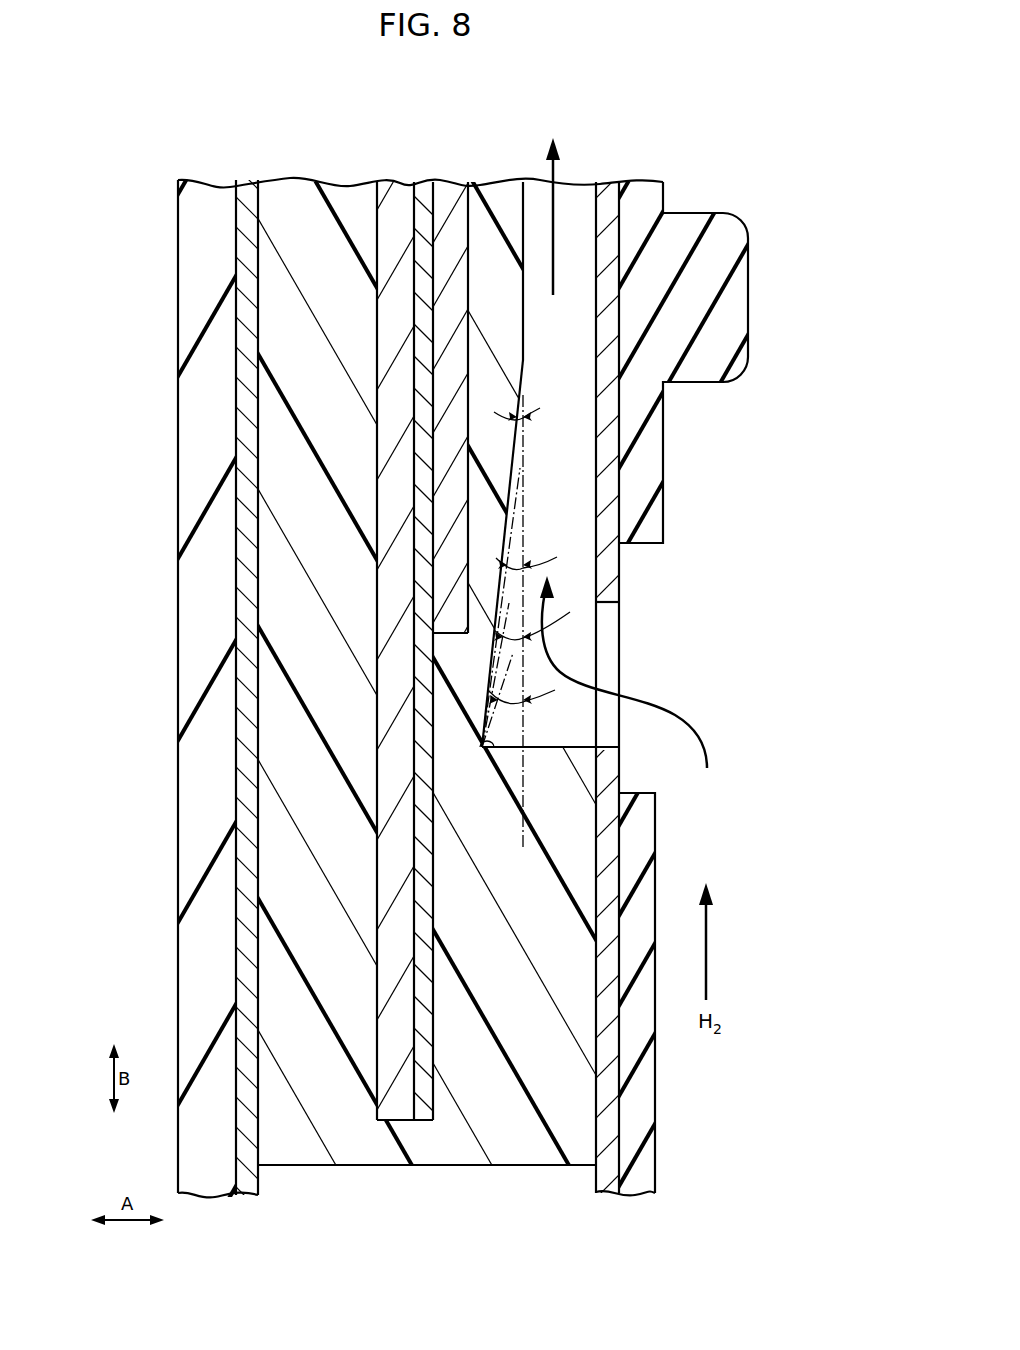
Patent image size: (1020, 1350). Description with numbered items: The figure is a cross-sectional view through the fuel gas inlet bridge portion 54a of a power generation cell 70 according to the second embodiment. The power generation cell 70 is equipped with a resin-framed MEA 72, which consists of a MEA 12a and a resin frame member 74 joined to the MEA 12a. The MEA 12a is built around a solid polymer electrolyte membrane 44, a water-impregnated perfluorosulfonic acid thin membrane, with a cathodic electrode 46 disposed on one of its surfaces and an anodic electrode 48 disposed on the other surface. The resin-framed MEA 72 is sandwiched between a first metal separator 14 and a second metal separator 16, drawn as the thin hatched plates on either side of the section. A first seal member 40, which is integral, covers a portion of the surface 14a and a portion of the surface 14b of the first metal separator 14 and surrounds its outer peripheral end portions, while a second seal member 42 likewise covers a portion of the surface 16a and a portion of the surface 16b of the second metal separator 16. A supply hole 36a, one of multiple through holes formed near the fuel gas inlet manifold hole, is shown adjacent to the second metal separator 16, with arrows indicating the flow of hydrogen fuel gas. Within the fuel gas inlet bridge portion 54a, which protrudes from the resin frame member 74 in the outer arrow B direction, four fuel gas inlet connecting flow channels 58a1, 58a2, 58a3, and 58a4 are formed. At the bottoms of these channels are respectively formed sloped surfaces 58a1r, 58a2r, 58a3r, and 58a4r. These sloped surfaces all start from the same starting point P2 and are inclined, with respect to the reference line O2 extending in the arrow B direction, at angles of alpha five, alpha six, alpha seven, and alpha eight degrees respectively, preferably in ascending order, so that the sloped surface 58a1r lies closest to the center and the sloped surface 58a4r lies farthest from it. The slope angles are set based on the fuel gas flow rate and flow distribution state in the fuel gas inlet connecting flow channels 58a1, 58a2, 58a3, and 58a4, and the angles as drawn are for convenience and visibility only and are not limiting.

The power generation cell 70 is at (658, 74).
The resin-framed MEA 72 is at (303, 98).
The resin frame member 74 is at (325, 183).
The MEA 12a is at (372, 133).
The cathodic electrode 46 is at (398, 195).
The solid polymer electrolyte membrane 44 is at (422, 190).
The anodic electrode 48 is at (453, 192).
The fuel gas inlet connecting flow channel 58a1 is at (575, 200).
The fuel gas inlet connecting flow channel 58a2 is at (501, 607).
The fuel gas inlet connecting flow channel 58a3 is at (495, 675).
The fuel gas inlet connecting flow channel 58a4 is at (497, 700).
The sloped surface 58a1r is at (517, 440).
The sloped surface 58a2r is at (512, 548).
The sloped surface 58a3r is at (505, 658).
The sloped surface 58a4r is at (497, 712).
The supply hole 36a is at (606, 677).
The first seal member 40 is at (193, 658).
The first metal separator 14 is at (233, 960).
The surface of the first metal separator 14a is at (258, 835).
The surface of the first metal separator 14b is at (233, 867).
The second seal member 42 is at (645, 838).
The starting point P2 is at (485, 752).
The reference line O2 is at (525, 633).
The second metal separator 16 is at (620, 1117).
The surface of the second metal separator 16a is at (612, 1076).
The surface of the second metal separator 16b is at (619, 1153).
The fuel gas inlet bridge portion 54a is at (359, 1150).